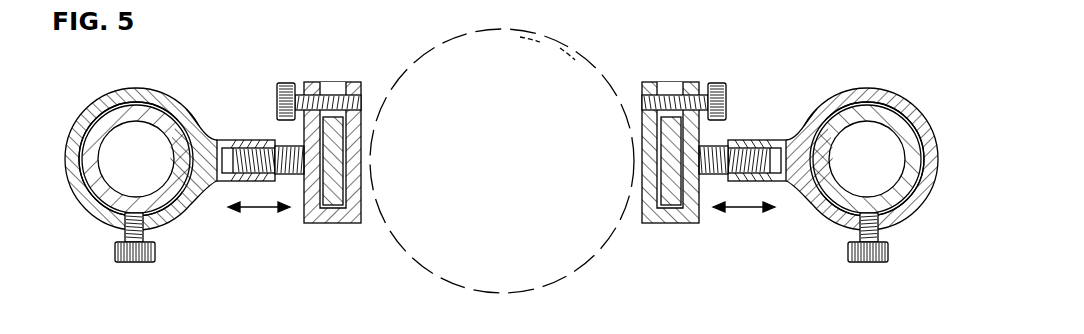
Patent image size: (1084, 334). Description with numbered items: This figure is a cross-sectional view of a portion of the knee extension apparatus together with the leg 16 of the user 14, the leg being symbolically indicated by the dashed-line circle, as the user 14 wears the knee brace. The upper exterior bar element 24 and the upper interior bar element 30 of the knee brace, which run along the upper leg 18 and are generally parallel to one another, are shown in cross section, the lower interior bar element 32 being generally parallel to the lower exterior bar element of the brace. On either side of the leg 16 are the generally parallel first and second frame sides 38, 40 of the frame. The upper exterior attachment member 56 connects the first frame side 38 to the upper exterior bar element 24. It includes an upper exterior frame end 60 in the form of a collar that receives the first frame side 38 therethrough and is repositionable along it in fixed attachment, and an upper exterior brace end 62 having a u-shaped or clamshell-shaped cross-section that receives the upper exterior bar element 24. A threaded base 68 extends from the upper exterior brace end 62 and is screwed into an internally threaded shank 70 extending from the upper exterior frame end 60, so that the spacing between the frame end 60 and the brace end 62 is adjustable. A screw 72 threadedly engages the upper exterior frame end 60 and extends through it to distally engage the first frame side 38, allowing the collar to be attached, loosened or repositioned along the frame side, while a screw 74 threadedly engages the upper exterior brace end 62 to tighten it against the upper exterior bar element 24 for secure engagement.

The user 14 is at (570, 72).
The leg 16 is at (548, 62).
The upper leg 18 is at (515, 48).
The upper exterior bar element 24 is at (674, 205).
The upper interior bar element 30 is at (333, 205).
The lower interior bar element 32 is at (125, 97).
The first frame side 38 is at (893, 102).
The second frame side 40 is at (70, 128).
The upper exterior attachment member 56 is at (850, 92).
The upper exterior frame end 60 is at (918, 108).
The upper exterior brace end 62 is at (647, 223).
The threaded base 68 is at (285, 138).
The internally threaded shank 70 is at (233, 140).
The screw 72 is at (117, 249).
The screw 74 is at (287, 83).